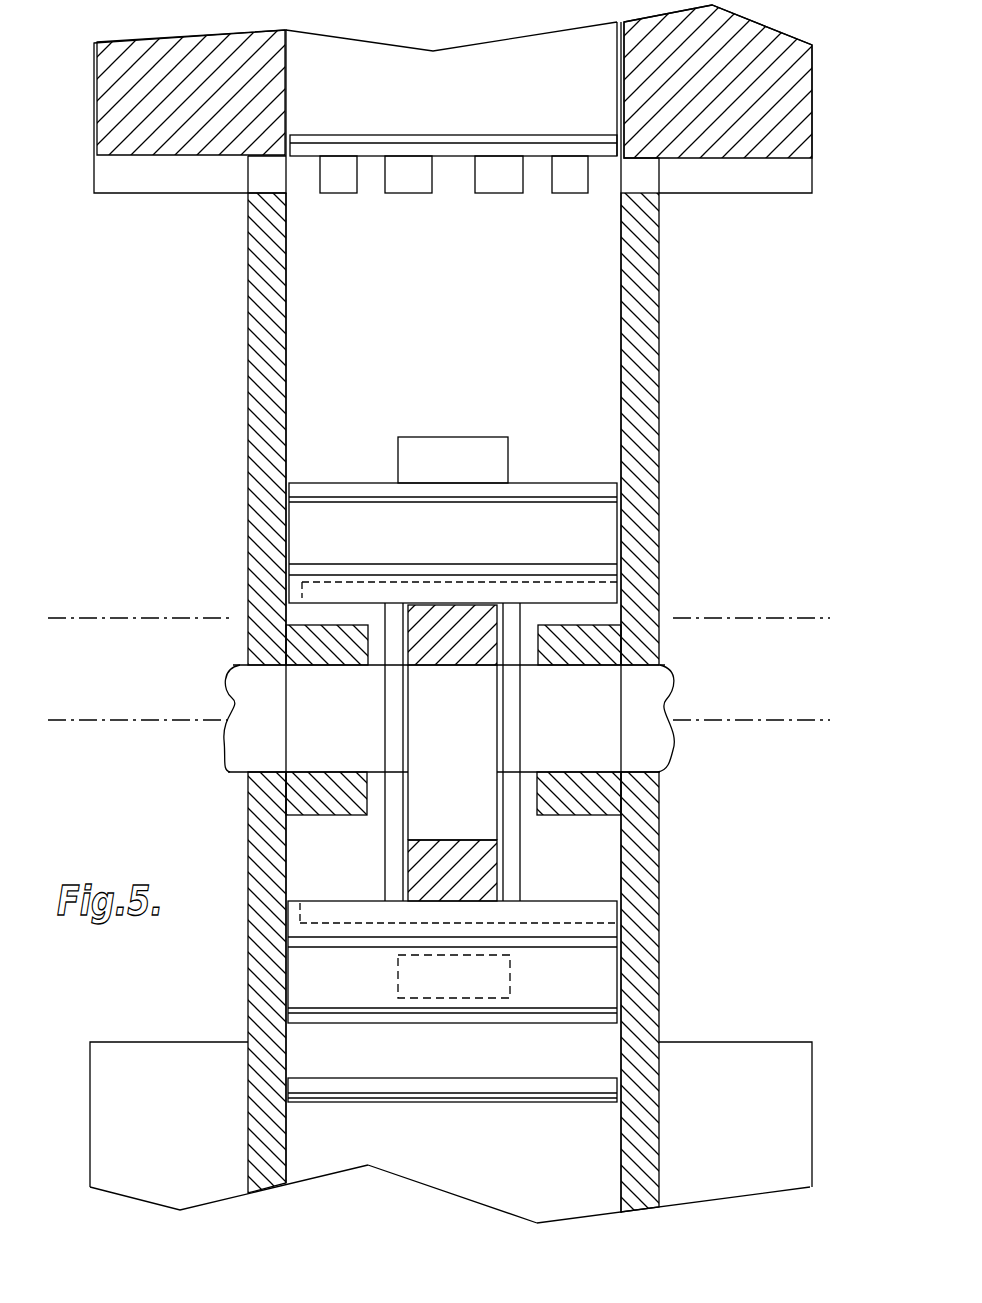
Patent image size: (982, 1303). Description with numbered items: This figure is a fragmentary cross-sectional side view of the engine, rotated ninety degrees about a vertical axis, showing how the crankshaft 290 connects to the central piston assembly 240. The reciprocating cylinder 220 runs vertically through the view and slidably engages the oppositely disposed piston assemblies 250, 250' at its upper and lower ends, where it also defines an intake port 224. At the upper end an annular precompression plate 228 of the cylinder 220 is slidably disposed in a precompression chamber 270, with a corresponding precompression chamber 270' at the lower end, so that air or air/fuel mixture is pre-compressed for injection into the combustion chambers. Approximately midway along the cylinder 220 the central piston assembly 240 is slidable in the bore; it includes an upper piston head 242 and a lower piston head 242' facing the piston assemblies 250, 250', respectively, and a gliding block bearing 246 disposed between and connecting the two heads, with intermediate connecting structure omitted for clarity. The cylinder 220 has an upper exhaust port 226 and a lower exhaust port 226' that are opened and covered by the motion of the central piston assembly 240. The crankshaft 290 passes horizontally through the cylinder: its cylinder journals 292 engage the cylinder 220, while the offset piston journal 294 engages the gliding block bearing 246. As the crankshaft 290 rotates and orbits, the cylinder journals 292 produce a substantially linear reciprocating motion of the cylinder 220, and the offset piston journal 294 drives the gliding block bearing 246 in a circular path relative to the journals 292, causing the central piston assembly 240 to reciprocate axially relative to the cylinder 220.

The reciprocating cylinder 220 is at (659, 490).
The intake port 224 is at (265, 181).
The upper exhaust port 226 is at (565, 445).
The annular precompression plate 228 is at (112, 87).
The central piston assembly 240 is at (519, 614).
The upper piston head 242 is at (525, 543).
The gliding block bearing 246 is at (493, 868).
The piston assembly 250 is at (508, 226).
The precompression chamber 270 is at (723, 134).
The crankshaft 290 is at (672, 669).
The cylinder journal 292 is at (247, 748).
The offset piston journal 294 is at (480, 753).
The lower piston head 242' is at (520, 962).
The lower exhaust port 226' is at (572, 976).
The piston assembly 250' is at (529, 1049).
The precompression chamber 270' is at (477, 1086).